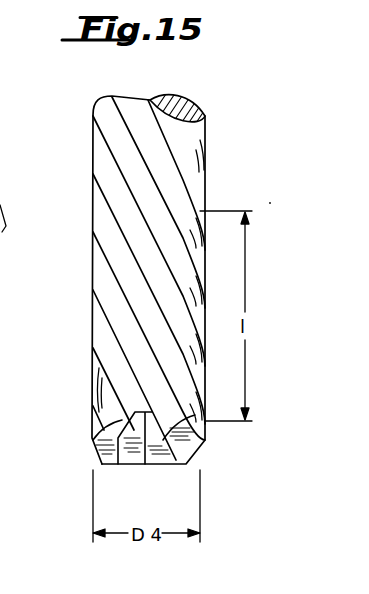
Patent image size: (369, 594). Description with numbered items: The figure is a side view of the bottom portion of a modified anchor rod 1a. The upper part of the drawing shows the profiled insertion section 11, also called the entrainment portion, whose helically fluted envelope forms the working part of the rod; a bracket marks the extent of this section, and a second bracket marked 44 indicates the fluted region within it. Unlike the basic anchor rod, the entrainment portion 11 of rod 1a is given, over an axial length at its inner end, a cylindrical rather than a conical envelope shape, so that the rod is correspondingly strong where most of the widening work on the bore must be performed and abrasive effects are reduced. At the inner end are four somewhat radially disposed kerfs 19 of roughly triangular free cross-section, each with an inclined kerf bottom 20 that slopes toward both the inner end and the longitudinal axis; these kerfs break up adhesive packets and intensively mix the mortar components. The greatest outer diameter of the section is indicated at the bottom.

The anchor rod 1a is at (211, 164).
The profiled insertion section 11 is at (45, 180).
The helical flute region 44 is at (88, 172).
The kerfs 19 is at (167, 462).
The kerf bottom 20 is at (143, 453).